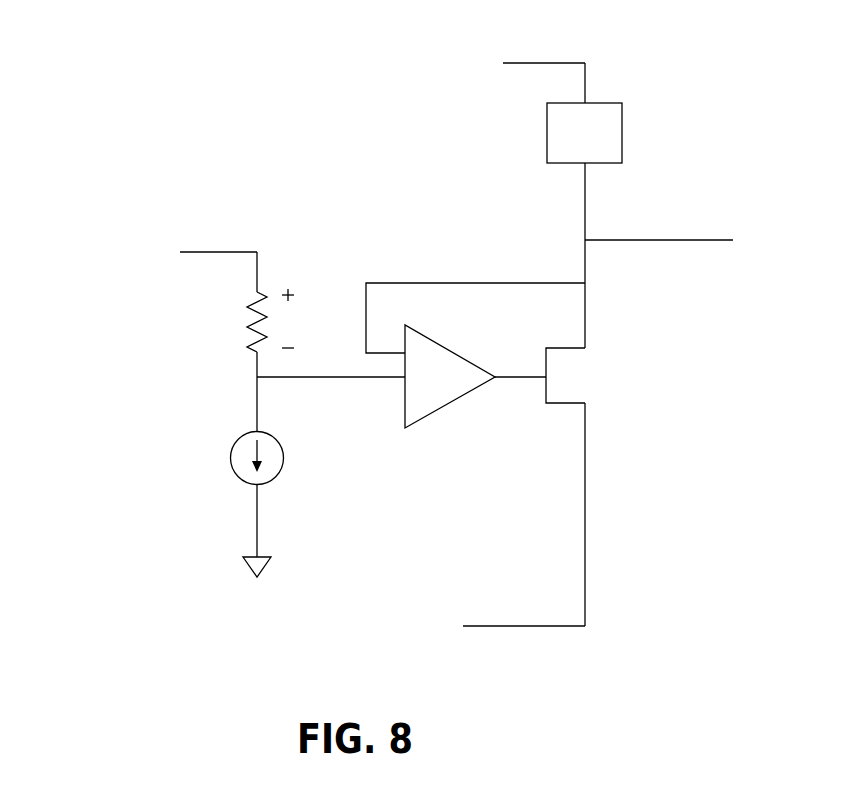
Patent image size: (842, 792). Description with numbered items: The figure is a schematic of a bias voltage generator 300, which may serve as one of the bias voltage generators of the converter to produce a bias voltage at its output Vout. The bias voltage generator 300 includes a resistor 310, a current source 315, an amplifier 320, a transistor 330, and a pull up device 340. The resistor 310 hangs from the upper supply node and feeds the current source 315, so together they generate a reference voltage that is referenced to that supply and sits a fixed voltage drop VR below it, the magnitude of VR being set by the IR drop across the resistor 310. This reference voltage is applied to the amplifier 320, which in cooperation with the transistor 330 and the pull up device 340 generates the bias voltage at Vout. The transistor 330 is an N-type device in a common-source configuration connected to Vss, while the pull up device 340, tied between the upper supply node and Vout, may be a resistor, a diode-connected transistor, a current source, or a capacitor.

The bias voltage generator 300 is at (128, 50).
The resistor 310 is at (243, 325).
The current source 315 is at (232, 452).
The amplifier 320 is at (438, 400).
The transistor 330 is at (575, 373).
The pull up device 340 is at (622, 118).